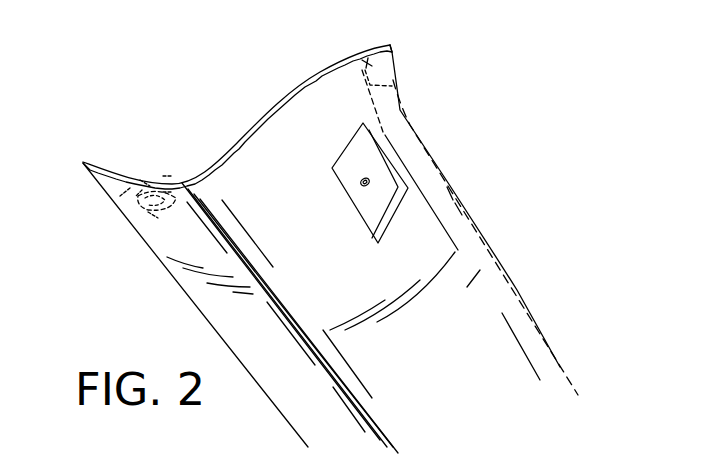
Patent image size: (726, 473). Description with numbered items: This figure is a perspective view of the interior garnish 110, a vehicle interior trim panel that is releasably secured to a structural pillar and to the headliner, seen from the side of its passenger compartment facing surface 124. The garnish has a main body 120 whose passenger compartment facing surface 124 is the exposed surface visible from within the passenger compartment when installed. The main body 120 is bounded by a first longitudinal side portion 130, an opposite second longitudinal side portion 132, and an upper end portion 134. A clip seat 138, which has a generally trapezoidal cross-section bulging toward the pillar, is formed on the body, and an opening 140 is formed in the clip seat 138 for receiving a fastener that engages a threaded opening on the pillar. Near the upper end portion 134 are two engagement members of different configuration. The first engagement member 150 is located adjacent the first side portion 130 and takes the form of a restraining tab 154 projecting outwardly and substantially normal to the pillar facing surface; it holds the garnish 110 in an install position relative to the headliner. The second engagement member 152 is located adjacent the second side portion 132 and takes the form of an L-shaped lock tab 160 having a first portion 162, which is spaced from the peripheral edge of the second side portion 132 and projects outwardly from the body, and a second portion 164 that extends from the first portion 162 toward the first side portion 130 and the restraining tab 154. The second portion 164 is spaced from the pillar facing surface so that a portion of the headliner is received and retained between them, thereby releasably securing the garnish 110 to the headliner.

The interior garnish 110 is at (528, 287).
The main body 120 is at (493, 357).
The passenger compartment facing surface 124 is at (465, 287).
The first longitudinal side portion 130 is at (481, 224).
The second longitudinal side portion 132 is at (203, 302).
The upper end portion 134 is at (268, 127).
The clip seat 138 is at (362, 203).
The opening 140 is at (370, 178).
The first engagement member 150 is at (387, 71).
The second engagement member 152 is at (162, 212).
The restraining tab 154 is at (357, 50).
The lock tab 160 is at (147, 180).
The first portion 162 is at (148, 192).
The second portion 164 is at (167, 185).